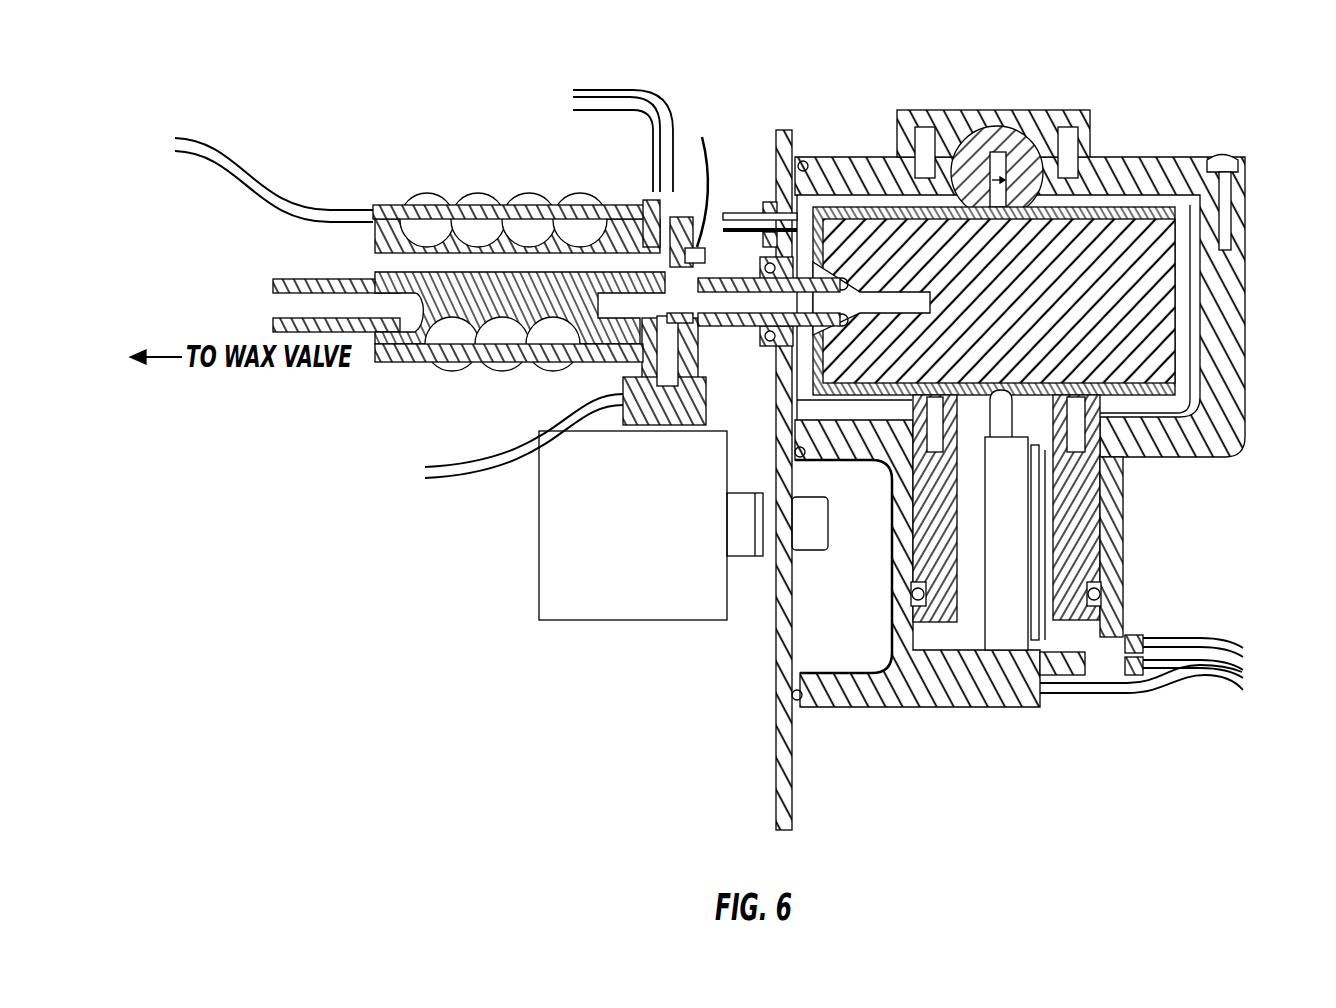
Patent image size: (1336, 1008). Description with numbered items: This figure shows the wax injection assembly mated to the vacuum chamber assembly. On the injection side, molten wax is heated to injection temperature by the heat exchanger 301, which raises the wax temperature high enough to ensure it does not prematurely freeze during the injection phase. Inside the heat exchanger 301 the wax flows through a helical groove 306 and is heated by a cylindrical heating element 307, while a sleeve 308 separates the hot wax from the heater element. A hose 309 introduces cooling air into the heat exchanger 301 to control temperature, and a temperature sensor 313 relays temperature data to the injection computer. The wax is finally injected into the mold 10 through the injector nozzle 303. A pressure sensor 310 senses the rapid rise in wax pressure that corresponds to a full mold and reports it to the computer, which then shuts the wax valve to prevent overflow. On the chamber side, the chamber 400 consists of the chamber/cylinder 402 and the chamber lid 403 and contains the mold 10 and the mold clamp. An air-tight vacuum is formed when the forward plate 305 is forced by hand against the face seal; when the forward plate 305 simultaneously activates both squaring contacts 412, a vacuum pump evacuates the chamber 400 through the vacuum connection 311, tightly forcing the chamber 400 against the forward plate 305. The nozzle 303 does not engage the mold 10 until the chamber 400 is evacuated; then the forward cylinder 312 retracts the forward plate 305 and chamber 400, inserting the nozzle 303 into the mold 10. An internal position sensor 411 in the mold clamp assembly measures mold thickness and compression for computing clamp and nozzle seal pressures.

The mold 10 is at (1036, 308).
The heat exchanger 301 is at (529, 308).
The injector nozzle 303 is at (750, 302).
The forward plate 305 is at (775, 690).
The helical groove 306 is at (467, 217).
The cylindrical heating element 307 is at (622, 213).
The sleeve 308 is at (541, 232).
The hose 309 is at (575, 100).
The pressure sensor 310 is at (623, 390).
The vacuum connection 311 is at (725, 213).
The forward cylinder 312 is at (659, 542).
The temperature sensor 313 is at (702, 137).
The chamber 400 is at (1258, 117).
The chamber/cylinder 402 is at (1185, 448).
The chamber lid 403 is at (1118, 162).
The internal position sensor 411 is at (1008, 573).
The squaring contacts 412 is at (797, 706).